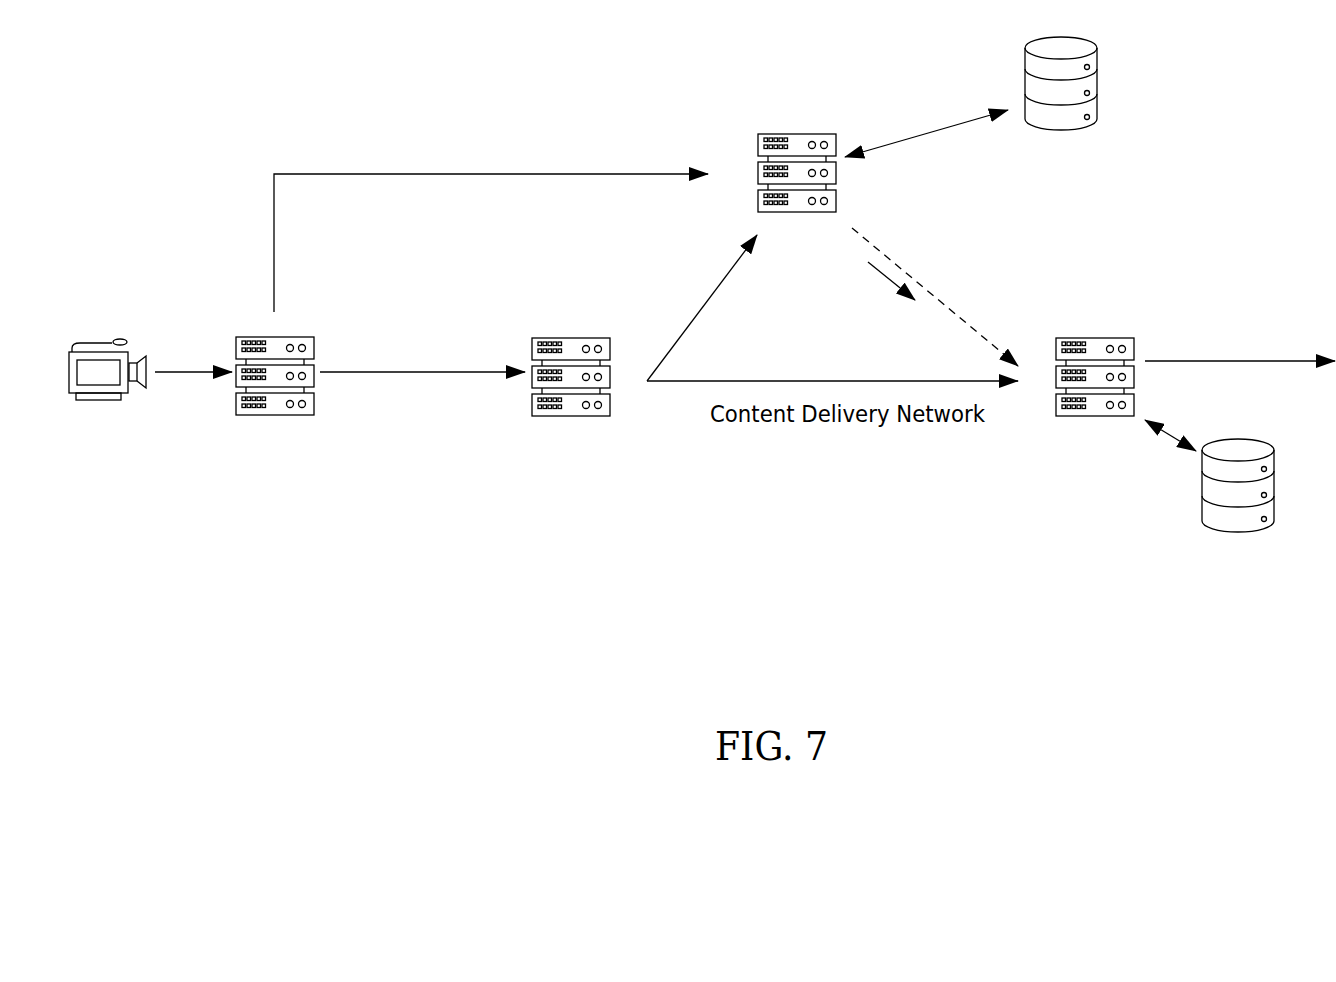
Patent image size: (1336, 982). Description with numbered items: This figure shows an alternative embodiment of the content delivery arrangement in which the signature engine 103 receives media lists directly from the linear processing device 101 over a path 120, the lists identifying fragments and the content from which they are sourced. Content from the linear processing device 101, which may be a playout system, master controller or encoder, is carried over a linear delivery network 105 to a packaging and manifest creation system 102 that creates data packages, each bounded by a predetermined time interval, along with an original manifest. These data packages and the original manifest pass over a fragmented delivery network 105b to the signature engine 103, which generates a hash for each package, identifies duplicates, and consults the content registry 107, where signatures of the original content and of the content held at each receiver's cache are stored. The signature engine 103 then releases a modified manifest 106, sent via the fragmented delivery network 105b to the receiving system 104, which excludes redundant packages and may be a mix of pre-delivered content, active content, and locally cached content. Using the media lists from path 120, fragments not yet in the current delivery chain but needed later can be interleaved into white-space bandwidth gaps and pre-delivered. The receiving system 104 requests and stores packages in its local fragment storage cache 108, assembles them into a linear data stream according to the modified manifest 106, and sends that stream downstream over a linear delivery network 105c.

The linear processing device 101 is at (275, 417).
The packaging and manifest creation system 102 is at (572, 416).
The signature engine 103 is at (797, 213).
The receiving system 104 is at (1095, 337).
The linear delivery network 105 is at (192, 370).
The fragmented delivery network 105b is at (705, 305).
The linear delivery network 105c is at (1232, 358).
The modified manifest 106 is at (884, 272).
The content registry 107 is at (1062, 133).
The local fragment storage cache 108 is at (1238, 535).
The path 120 is at (296, 172).